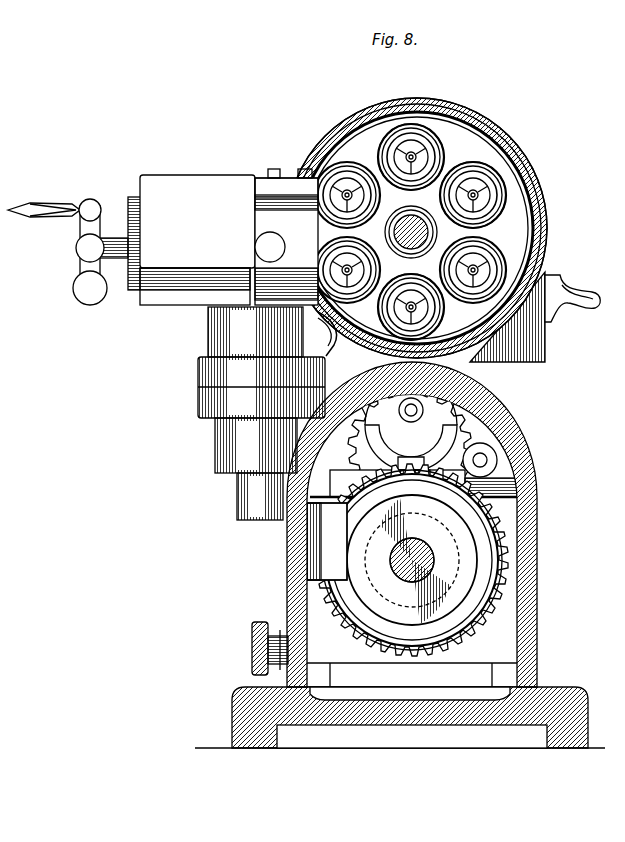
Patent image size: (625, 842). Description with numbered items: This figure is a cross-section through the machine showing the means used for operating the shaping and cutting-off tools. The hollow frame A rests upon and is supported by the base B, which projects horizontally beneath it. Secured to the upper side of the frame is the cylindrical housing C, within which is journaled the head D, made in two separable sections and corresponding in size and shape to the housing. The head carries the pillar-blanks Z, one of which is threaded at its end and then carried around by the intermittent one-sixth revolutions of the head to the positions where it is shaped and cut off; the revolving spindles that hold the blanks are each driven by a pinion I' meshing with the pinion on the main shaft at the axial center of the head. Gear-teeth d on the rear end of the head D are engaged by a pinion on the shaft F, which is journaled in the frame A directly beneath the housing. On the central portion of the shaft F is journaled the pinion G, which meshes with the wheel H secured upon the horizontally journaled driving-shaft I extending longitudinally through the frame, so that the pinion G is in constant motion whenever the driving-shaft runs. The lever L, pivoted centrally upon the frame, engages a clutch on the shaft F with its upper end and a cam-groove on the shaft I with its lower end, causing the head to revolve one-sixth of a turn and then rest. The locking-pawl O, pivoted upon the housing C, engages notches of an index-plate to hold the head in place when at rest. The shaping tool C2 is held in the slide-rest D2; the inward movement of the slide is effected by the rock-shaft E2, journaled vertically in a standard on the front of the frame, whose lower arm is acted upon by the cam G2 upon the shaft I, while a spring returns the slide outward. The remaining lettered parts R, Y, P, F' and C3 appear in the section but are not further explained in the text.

The hollow frame A is at (398, 479).
The base B is at (410, 717).
The cylindrical housing C is at (433, 110).
The journaled head D is at (470, 130).
The roller R is at (445, 128).
The roller wheel Y is at (556, 200).
The pillar-blank Z is at (402, 280).
The pinion G is at (411, 225).
The locking-pawl O is at (567, 303).
The slide-rest D2 is at (191, 240).
The shaping tool C2 is at (318, 268).
The pinion I' is at (286, 204).
The hand lever P is at (539, 532).
The shaft F is at (248, 390).
The rock-shaft E2 is at (262, 520).
The bearing F' is at (411, 425).
The lever L is at (411, 456).
The gear-teeth d is at (407, 448).
The cross bar C3 is at (415, 483).
The cam G2 is at (412, 560).
The driving-shaft I is at (405, 571).
The gear-wheel H is at (362, 633).